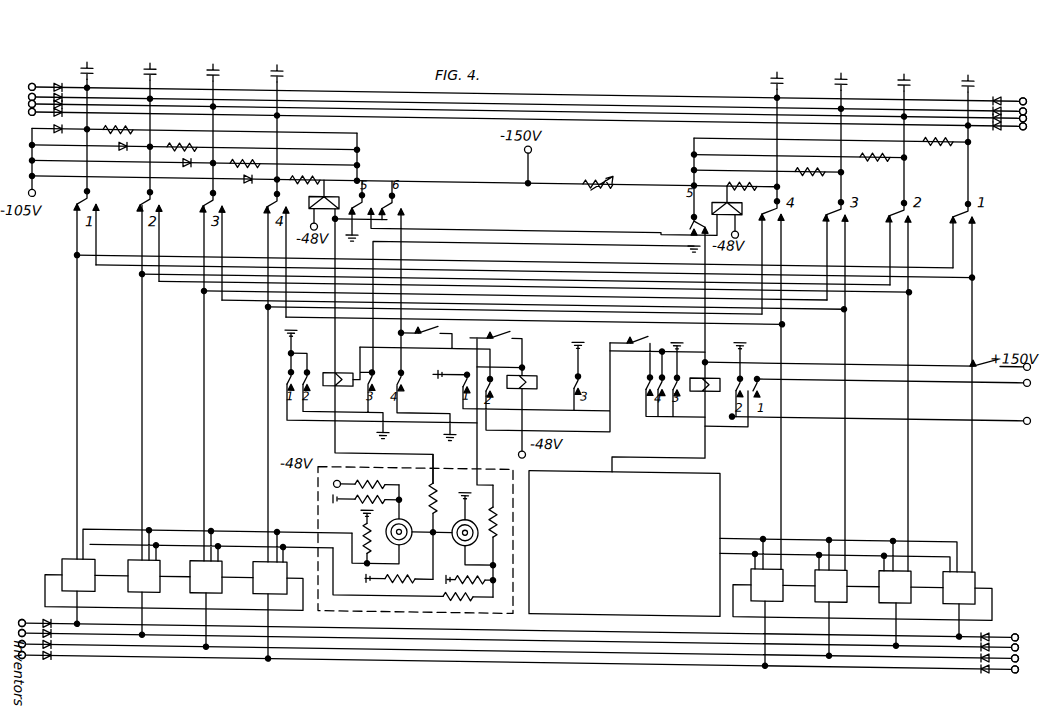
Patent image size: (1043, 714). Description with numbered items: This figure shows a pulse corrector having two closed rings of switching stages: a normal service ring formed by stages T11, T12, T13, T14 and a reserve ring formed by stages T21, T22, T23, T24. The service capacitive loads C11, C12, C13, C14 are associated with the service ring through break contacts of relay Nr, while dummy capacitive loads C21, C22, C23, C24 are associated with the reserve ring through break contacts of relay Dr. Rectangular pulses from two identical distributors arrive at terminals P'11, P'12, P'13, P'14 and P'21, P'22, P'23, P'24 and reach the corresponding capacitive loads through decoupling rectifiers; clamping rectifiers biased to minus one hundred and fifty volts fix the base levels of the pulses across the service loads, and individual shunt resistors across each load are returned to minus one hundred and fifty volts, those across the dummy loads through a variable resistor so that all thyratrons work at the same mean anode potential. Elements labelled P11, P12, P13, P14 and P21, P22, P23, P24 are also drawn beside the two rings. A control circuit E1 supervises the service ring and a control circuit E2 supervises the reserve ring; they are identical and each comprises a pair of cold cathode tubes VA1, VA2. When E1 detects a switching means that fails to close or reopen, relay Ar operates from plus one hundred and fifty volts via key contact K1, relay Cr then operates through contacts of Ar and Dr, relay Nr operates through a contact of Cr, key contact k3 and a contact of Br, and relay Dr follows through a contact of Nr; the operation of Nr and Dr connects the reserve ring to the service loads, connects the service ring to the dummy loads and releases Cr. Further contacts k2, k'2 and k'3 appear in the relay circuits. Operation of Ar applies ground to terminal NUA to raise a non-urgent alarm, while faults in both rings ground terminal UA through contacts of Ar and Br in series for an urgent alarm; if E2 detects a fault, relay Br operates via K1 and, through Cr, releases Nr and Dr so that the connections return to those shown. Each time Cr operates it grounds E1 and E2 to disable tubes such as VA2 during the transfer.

The service capacitive load C11 is at (101, 127).
The service capacitive load C12 is at (164, 128).
The service capacitive load C13 is at (227, 129).
The service capacitive load C14 is at (291, 130).
The dummy capacitive load C21 is at (962, 67).
The dummy capacitive load C22 is at (883, 136).
The dummy capacitive load C23 is at (819, 135).
The dummy capacitive load C24 is at (770, 68).
The pulse input terminal P'11 is at (52, 73).
The pulse input terminal P'12 is at (109, 146).
The pulse input terminal P'13 is at (76, 150).
The pulse input terminal P'14 is at (51, 154).
The pulse input terminal P'21 is at (1011, 83).
The pulse input terminal P'22 is at (970, 134).
The pulse input terminal P'23 is at (971, 150).
The pulse input terminal P'24 is at (1001, 154).
The switching stage of normal service ring T11 is at (92, 568).
The switching stage of normal service ring T12 is at (158, 569).
The switching stage of normal service ring T13 is at (221, 569).
The switching stage of normal service ring T14 is at (284, 570).
The switching stage of reserve ring T21 is at (974, 581).
The switching stage of reserve ring T22 is at (908, 580).
The switching stage of reserve ring T23 is at (845, 580).
The switching stage of reserve ring T24 is at (781, 579).
The output terminal P11 is at (30, 623).
The output terminal P12 is at (33, 633).
The output terminal P13 is at (35, 644).
The output terminal P14 is at (38, 655).
The output terminal P21 is at (982, 623).
The output terminal P22 is at (983, 634).
The output terminal P23 is at (983, 646).
The output terminal P24 is at (997, 658).
The transfer relay Nr is at (371, 331).
The transfer relay Dr is at (721, 211).
The service-ring alarm relay Ar is at (343, 367).
The transfer control relay Cr is at (532, 416).
The reserve-ring alarm relay Br is at (703, 410).
The key contact K1 is at (868, 352).
The key contact k2 is at (497, 404).
The key contact k'2 is at (413, 352).
The key contact k3 is at (662, 379).
The key contact k'3 is at (655, 354).
The cold cathode tube VA1 is at (409, 511).
The cold cathode tube VA2 is at (457, 543).
The control circuit E1 is at (322, 484).
The control circuit E2 is at (683, 498).
The urgent alarm terminal UA is at (894, 389).
The non-urgent alarm terminal NUA is at (881, 427).